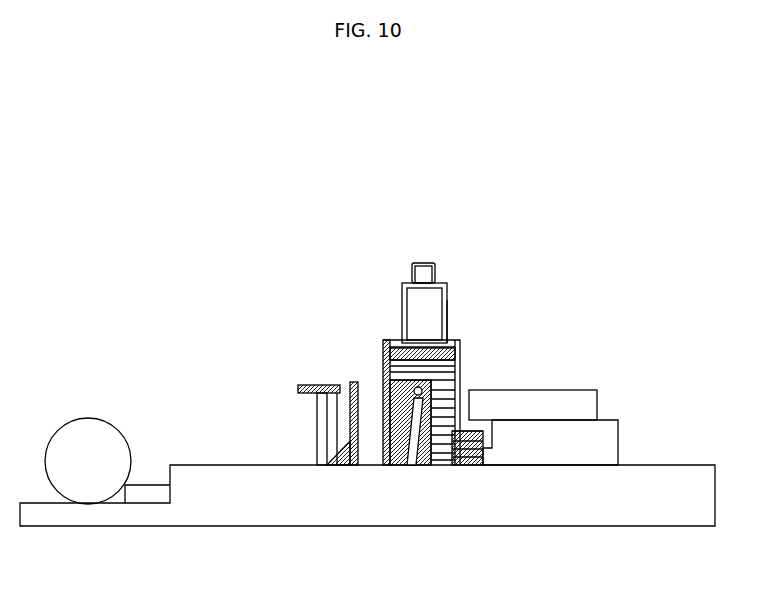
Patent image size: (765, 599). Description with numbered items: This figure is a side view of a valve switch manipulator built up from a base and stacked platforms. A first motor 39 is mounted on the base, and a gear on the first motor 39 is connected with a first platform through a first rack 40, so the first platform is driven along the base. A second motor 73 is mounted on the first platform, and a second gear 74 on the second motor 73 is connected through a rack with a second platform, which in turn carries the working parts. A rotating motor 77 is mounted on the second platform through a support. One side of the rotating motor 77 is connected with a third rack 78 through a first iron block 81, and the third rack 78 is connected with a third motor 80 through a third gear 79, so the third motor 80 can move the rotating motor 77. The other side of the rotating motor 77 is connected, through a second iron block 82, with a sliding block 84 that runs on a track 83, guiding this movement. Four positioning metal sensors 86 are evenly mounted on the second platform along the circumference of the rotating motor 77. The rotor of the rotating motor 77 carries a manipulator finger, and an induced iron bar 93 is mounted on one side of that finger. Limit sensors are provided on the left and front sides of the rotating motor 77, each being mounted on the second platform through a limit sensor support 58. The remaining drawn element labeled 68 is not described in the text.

The first motor 39 is at (87, 417).
The first rack 40 is at (150, 485).
The limit sensor support 58 is at (415, 465).
The flange 68 is at (320, 384).
The second motor 73 is at (552, 420).
The second gear 74 is at (468, 428).
The rotating motor 77 is at (383, 395).
The third rack 78 is at (383, 441).
The third gear 79 is at (467, 466).
The third motor 80 is at (506, 390).
The first iron block 81 is at (393, 340).
The second iron block 82 is at (450, 300).
The track 83 is at (418, 263).
The sliding block 84 is at (445, 289).
The positioning metal sensor 86 is at (346, 385).
The induced iron bar 93 is at (356, 381).